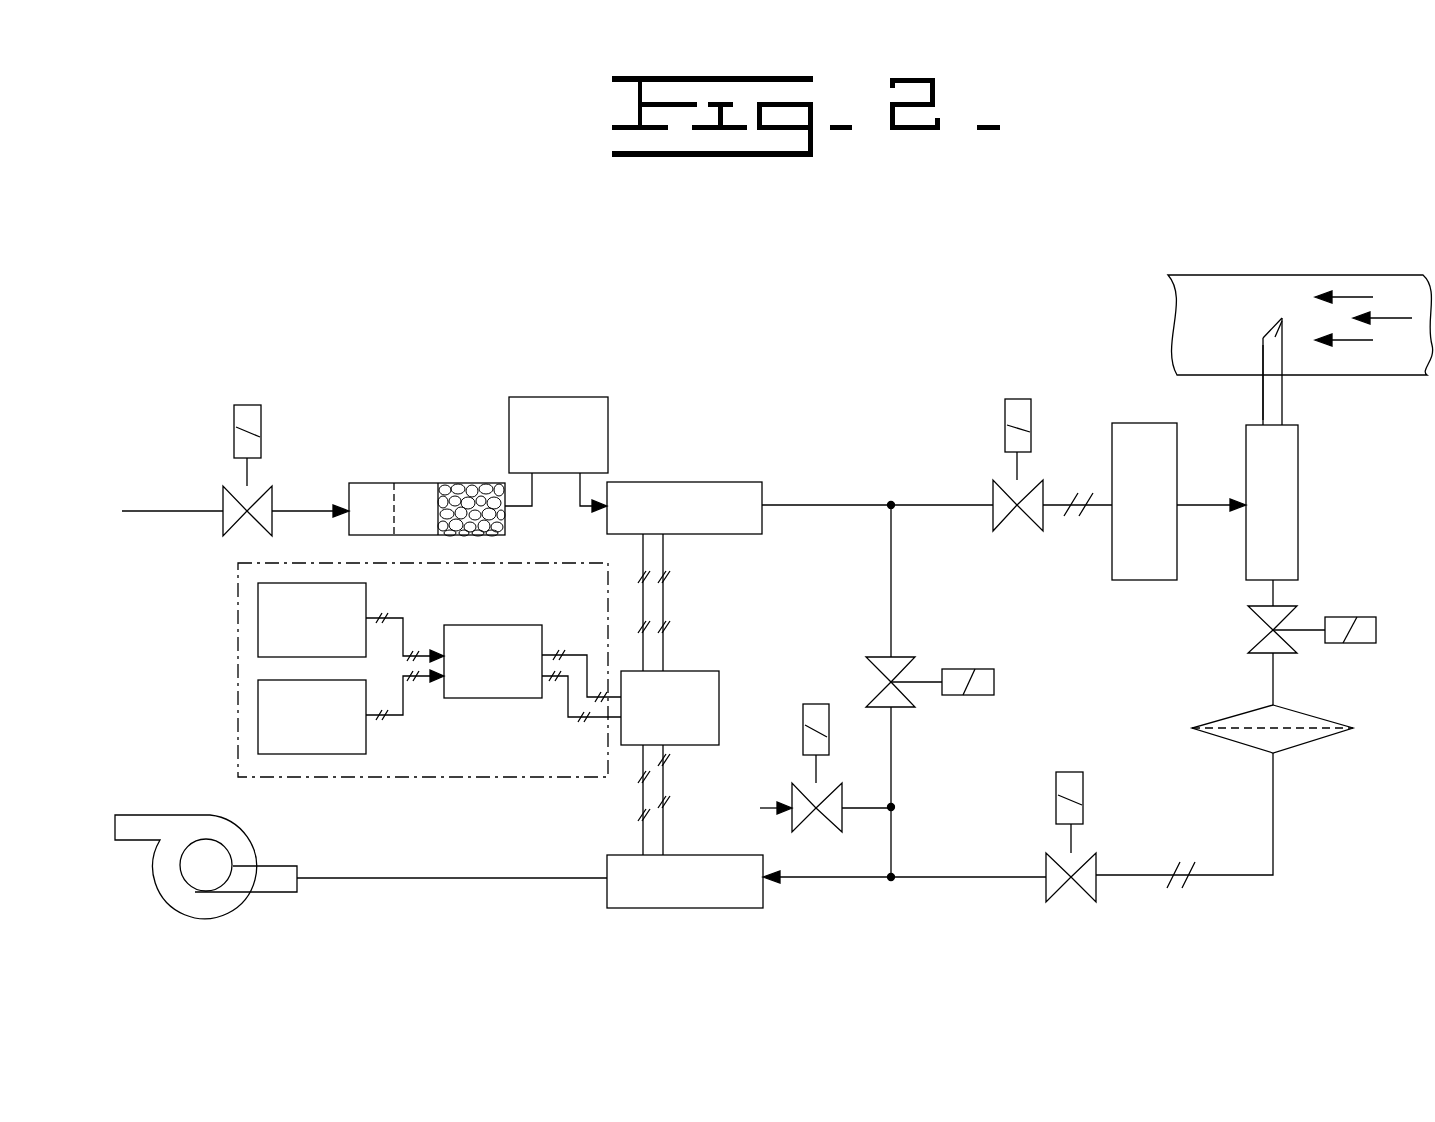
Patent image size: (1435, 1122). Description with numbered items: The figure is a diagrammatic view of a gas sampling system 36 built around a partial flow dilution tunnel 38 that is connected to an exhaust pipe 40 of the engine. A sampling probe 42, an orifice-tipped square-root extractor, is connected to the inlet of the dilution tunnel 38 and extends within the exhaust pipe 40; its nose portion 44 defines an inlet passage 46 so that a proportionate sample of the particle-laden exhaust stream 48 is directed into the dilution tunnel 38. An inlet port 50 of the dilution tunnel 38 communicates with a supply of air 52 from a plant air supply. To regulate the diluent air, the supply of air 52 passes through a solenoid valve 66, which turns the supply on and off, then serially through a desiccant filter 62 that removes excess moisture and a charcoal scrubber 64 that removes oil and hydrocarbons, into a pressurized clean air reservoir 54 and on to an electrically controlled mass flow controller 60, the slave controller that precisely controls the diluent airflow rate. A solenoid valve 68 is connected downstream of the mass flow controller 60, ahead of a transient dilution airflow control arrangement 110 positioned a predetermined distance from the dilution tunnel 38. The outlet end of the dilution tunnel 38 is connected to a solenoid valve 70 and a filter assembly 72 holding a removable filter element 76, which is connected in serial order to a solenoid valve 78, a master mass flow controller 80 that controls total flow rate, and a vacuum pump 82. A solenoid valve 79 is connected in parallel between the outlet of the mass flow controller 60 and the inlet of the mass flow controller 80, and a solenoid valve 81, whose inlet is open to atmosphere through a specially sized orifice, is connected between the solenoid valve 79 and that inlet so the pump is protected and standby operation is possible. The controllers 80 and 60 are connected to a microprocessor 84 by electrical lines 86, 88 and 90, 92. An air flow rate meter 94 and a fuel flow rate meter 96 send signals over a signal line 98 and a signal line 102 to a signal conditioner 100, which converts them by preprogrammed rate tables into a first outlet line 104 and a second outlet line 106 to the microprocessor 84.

The gas sampling system 36 is at (862, 292).
The partial flow dilution tunnel 38 is at (1298, 482).
The exhaust pipe 40 is at (1295, 275).
The sampling probe 42 is at (1263, 417).
The nose portion 44 is at (1263, 363).
The inlet passage 46 is at (1280, 325).
The particle-laden exhaust stream 48 is at (1365, 317).
The inlet port 50 is at (1243, 508).
The supply of air 52 is at (187, 511).
The pressurized clean air reservoir 54 is at (509, 420).
The mass flow controller 60 is at (728, 482).
The desiccant filter 62 is at (365, 483).
The charcoal scrubber 64 is at (478, 483).
The solenoid valve 66 is at (248, 487).
The solenoid valve 68 is at (1015, 480).
The solenoid valve 70 is at (1310, 630).
The filter assembly 72 is at (1314, 712).
The filter element 76 is at (1312, 740).
The solenoid valve 78 is at (1075, 852).
The solenoid valve 79 is at (922, 681).
The mass flow controller 80 is at (607, 888).
The solenoid valve 81 is at (820, 783).
The vacuum pump 82 is at (220, 878).
The microprocessor 84 is at (719, 702).
The electrical line 86 is at (643, 840).
The electrical line 88 is at (663, 840).
The electrical line 90 is at (643, 568).
The electrical line 92 is at (663, 550).
The air flow rate meter 94 is at (258, 603).
The fuel flow rate meter 96 is at (258, 693).
The signal line 98 is at (397, 618).
The signal conditioner 100 is at (477, 698).
The signal line 102 is at (398, 715).
The first outlet line 104 is at (575, 655).
The second outlet line 106 is at (593, 718).
The transient dilution airflow control arrangement 110 is at (1143, 423).